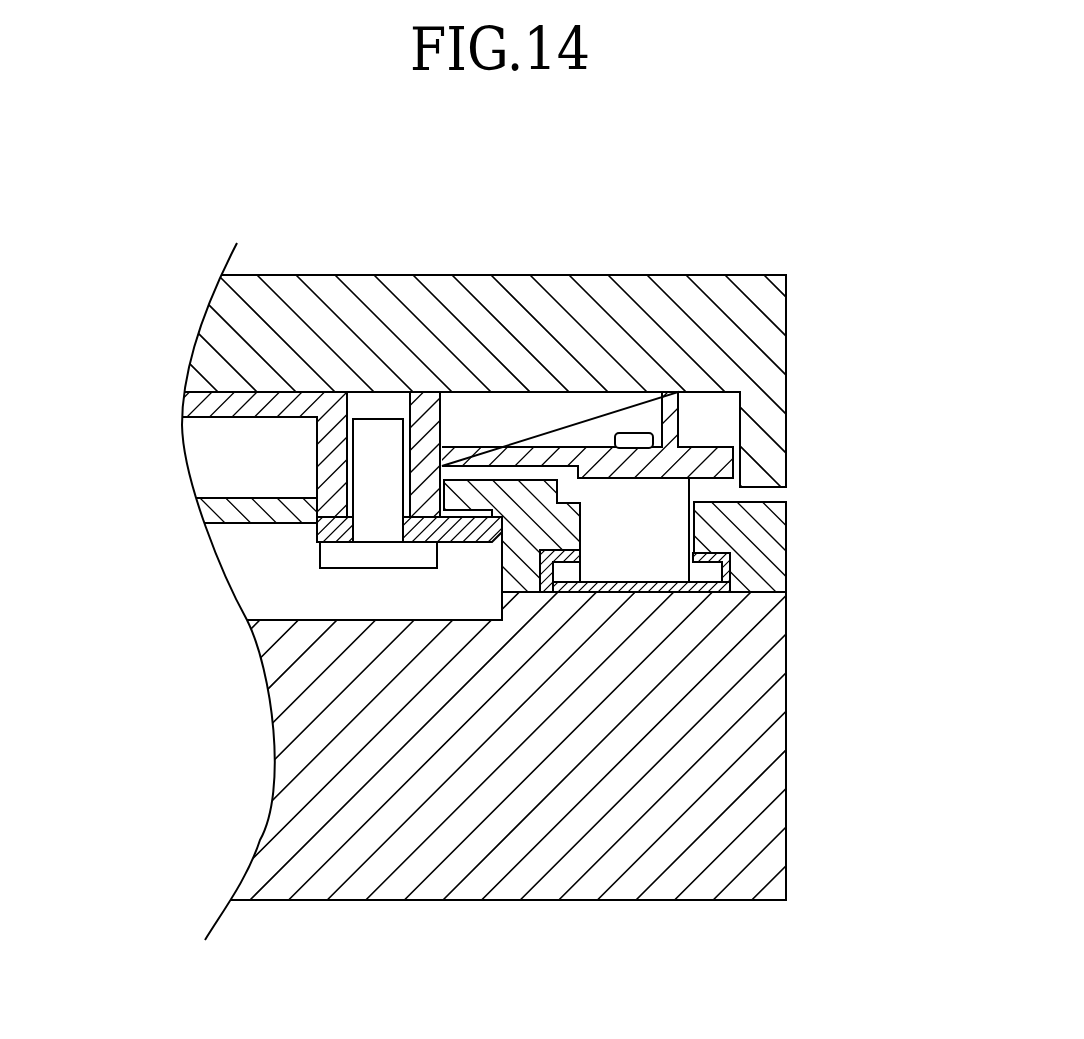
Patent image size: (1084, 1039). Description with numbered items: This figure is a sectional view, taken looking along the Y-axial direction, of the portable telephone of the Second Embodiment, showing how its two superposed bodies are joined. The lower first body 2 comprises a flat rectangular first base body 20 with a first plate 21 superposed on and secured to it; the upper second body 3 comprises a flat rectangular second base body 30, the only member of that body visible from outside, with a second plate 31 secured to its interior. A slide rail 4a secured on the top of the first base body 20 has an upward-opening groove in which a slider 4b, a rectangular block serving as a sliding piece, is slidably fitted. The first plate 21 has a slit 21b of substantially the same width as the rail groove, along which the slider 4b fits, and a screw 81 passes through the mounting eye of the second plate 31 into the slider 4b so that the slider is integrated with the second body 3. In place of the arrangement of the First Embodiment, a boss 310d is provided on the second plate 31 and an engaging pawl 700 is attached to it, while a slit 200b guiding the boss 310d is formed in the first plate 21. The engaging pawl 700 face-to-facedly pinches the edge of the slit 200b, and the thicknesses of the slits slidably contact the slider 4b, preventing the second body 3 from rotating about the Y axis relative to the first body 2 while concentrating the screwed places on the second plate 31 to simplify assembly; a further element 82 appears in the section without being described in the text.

The second body 3 is at (907, 330).
The second base body 30 is at (773, 352).
The second plate 31 is at (675, 420).
The first body 2 is at (92, 538).
The first base body 20 is at (277, 650).
The first plate 21 is at (266, 521).
The slit 21b is at (695, 502).
The slit 200b is at (316, 502).
The boss 310d is at (325, 433).
The slide rail 4a is at (728, 570).
The slider 4b is at (650, 572).
The engaging pawl 700 is at (458, 523).
The screw 81 is at (637, 433).
The pad 82 is at (372, 560).